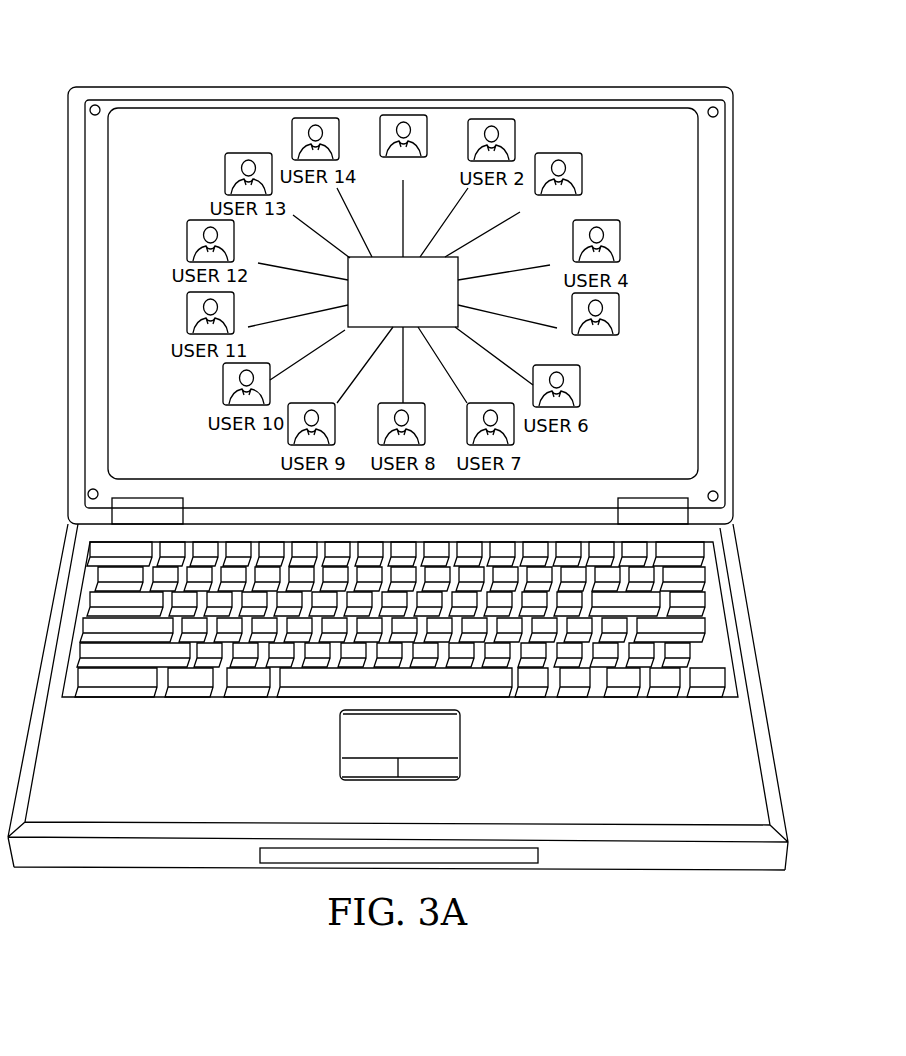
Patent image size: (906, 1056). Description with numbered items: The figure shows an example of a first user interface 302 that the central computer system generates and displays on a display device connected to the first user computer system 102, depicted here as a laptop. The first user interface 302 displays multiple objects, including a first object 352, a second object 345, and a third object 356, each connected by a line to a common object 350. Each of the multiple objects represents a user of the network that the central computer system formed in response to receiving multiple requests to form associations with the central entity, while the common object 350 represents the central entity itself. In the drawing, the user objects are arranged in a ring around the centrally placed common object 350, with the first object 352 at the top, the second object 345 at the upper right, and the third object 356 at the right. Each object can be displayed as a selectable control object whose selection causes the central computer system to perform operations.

The first user computer system 102 is at (366, 86).
The first user interface 302 is at (624, 239).
The common object 350 is at (458, 289).
The first object 352 is at (413, 118).
The second object 345 is at (550, 153).
The third object 356 is at (614, 330).